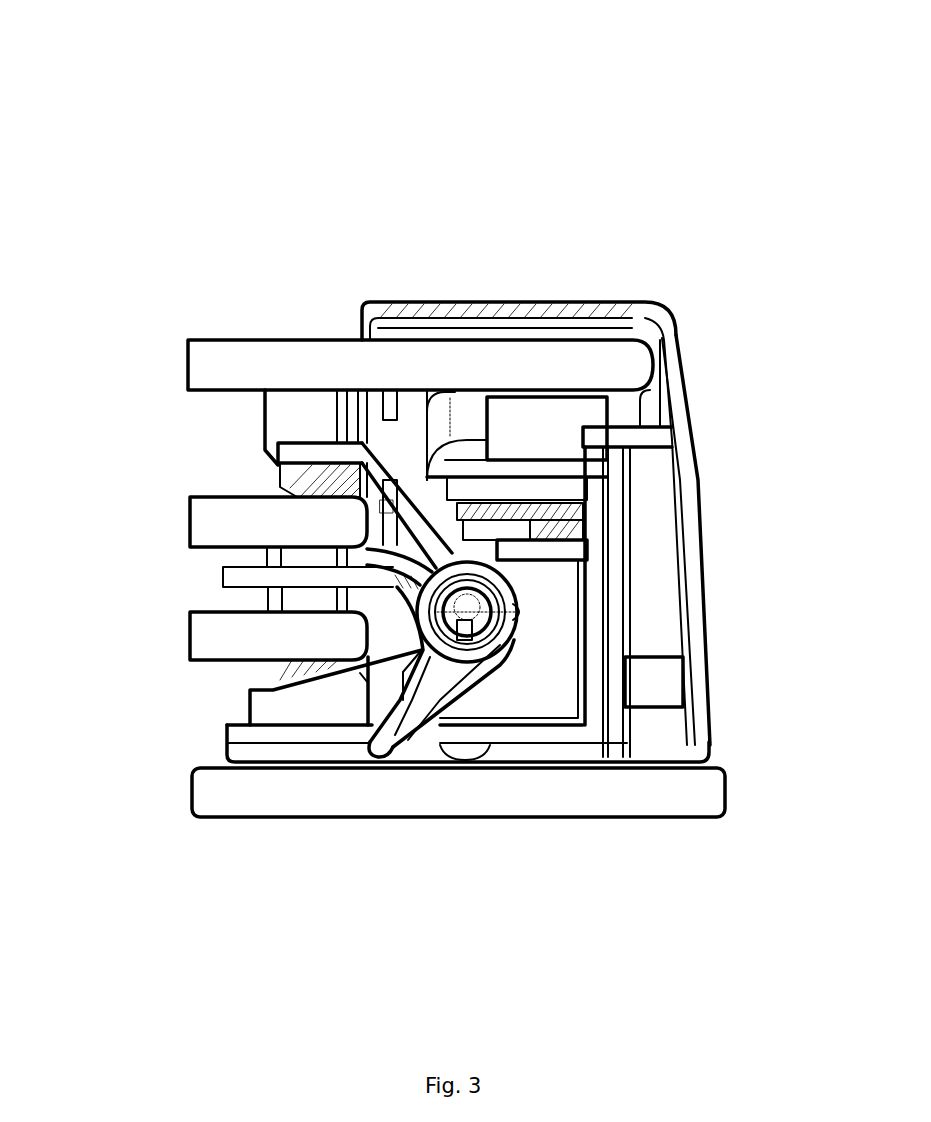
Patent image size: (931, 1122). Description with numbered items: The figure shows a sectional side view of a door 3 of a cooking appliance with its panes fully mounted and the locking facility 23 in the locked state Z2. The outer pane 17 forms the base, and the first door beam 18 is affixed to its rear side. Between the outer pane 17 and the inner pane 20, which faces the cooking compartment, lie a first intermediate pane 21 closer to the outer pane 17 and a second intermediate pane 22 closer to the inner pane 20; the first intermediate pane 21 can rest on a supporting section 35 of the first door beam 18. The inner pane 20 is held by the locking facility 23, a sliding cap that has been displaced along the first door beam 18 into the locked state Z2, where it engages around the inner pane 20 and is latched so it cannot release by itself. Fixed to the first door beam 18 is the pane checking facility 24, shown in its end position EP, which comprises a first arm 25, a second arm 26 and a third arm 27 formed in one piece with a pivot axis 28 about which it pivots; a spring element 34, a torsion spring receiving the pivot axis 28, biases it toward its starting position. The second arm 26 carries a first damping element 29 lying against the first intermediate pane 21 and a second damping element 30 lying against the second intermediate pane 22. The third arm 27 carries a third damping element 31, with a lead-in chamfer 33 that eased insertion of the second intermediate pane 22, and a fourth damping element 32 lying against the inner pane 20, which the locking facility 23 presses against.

The door 3 is at (362, 66).
The locked state Z2 is at (460, 252).
The outer pane 17 is at (280, 822).
The first door beam 18 is at (700, 513).
The inner pane 20 is at (263, 340).
The first intermediate pane 21 is at (190, 637).
The second intermediate pane 22 is at (190, 512).
The locking facility 23 is at (563, 300).
The pane checking facility 24 is at (165, 355).
The first arm 25 is at (382, 760).
The second arm 26 is at (322, 583).
The third arm 27 is at (362, 445).
The pivot axis 28 is at (523, 617).
The first damping element 29 is at (270, 600).
The second damping element 30 is at (270, 560).
The third damping element 31 is at (317, 455).
The fourth damping element 32 is at (263, 420).
The lead-in chamfer 33 is at (283, 470).
The spring element 34 is at (447, 676).
The supporting section 35 is at (277, 667).